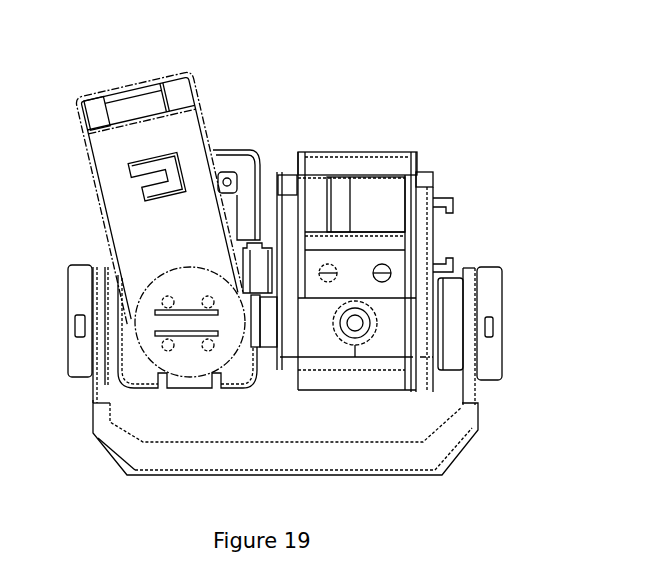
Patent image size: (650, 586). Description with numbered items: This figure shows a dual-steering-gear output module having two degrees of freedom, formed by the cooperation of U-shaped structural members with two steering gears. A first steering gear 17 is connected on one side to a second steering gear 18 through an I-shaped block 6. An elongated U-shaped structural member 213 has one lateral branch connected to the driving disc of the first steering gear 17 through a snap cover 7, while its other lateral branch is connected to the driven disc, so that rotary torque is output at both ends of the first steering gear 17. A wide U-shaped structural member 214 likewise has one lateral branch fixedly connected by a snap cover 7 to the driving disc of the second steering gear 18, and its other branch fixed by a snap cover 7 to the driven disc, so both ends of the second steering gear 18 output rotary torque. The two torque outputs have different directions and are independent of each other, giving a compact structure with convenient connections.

The elongated U-shaped structural member 213 is at (92, 113).
The first steering gear 17 is at (235, 163).
The I-shaped block 6 is at (258, 263).
The second steering gear 18 is at (392, 202).
The snap cover 7 is at (150, 313).
The wide U-shaped structural member 214 is at (460, 432).